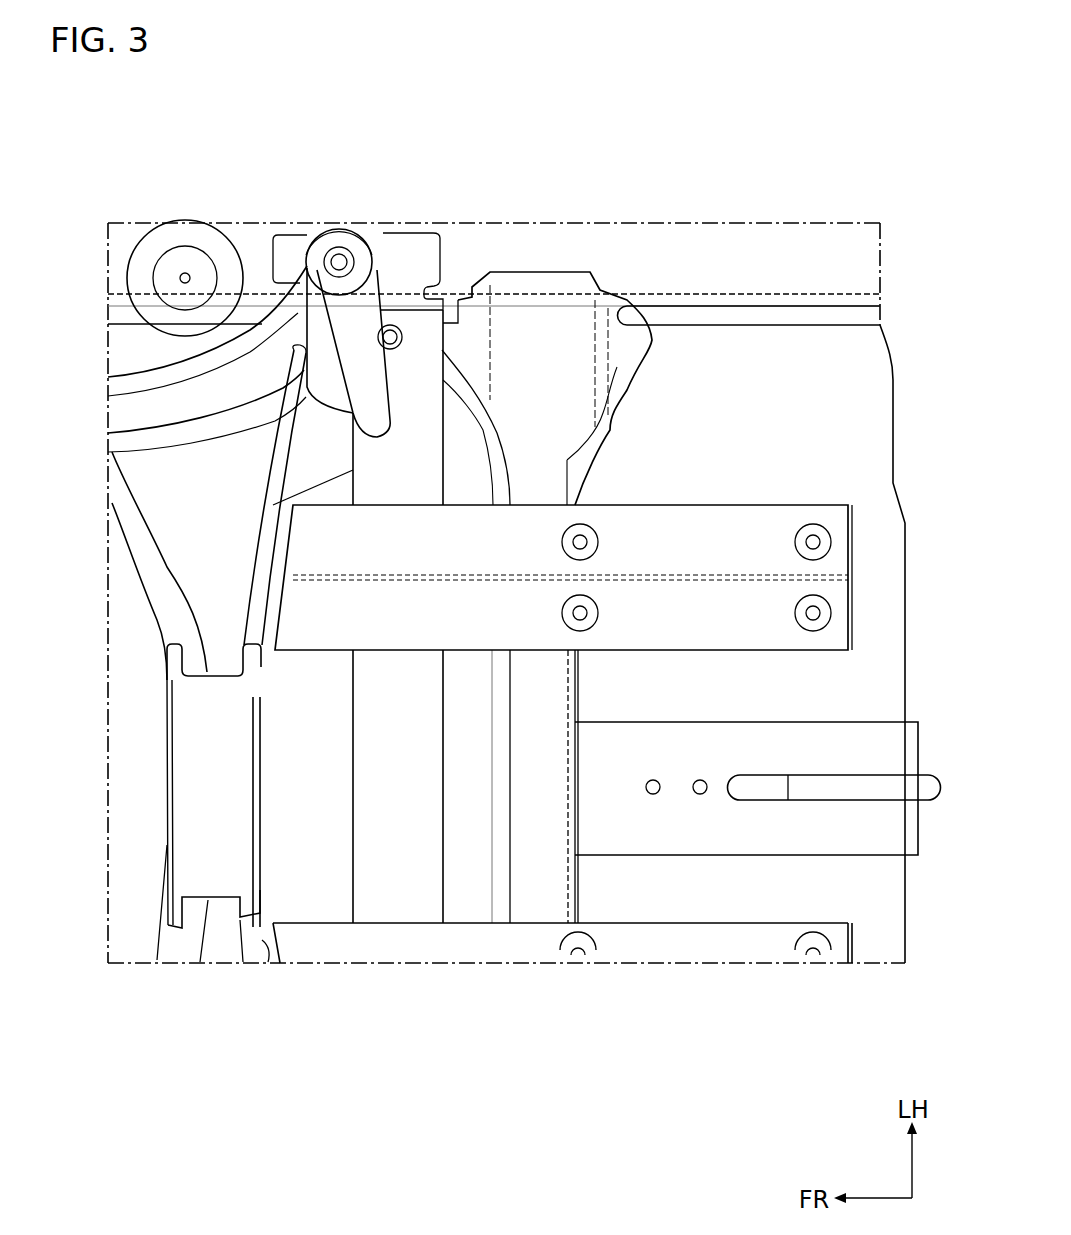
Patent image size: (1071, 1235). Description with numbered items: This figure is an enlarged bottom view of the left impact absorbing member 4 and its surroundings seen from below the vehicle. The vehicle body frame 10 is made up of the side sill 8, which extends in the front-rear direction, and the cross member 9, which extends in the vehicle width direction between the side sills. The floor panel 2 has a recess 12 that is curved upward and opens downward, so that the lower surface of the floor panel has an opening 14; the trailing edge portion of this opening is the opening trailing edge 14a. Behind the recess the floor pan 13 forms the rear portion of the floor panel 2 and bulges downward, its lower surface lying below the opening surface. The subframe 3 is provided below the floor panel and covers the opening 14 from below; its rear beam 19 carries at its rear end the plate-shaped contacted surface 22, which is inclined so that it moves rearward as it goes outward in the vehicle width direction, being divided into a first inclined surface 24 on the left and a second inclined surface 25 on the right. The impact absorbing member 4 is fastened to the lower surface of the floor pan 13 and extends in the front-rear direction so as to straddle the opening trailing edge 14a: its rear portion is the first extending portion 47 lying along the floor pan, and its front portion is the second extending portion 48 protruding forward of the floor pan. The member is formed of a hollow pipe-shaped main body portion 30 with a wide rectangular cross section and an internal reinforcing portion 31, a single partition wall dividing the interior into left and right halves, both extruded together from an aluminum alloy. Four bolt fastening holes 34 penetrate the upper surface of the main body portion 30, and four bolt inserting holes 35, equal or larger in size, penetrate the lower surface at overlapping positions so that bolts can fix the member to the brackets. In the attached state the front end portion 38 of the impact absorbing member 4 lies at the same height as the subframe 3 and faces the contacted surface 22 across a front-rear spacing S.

The floor panel 2 is at (830, 310).
The subframe 3 is at (150, 843).
The impact absorbing member 4 is at (720, 500).
The side sill 8 is at (253, 247).
The cross member 9 is at (405, 358).
The vehicle body frame 10 is at (253, 151).
The recess 12 is at (310, 454).
The floor pan 13 is at (803, 378).
The opening 14 is at (312, 893).
The opening trailing edge 14a is at (473, 897).
The rear beam 19 is at (192, 563).
The contacted surface 22 is at (258, 726).
The first inclined surface 24 is at (273, 545).
The second inclined surface 25 is at (265, 944).
The main body portion 30 is at (526, 540).
The reinforcing portion 31 is at (452, 575).
The bolt fastening hole 34 is at (590, 538).
The bolt inserting hole 35 is at (583, 540).
The front end portion 38 is at (273, 610).
The first extending portion 47 is at (723, 623).
The second extending portion 48 is at (405, 620).
The spacing S is at (273, 567).